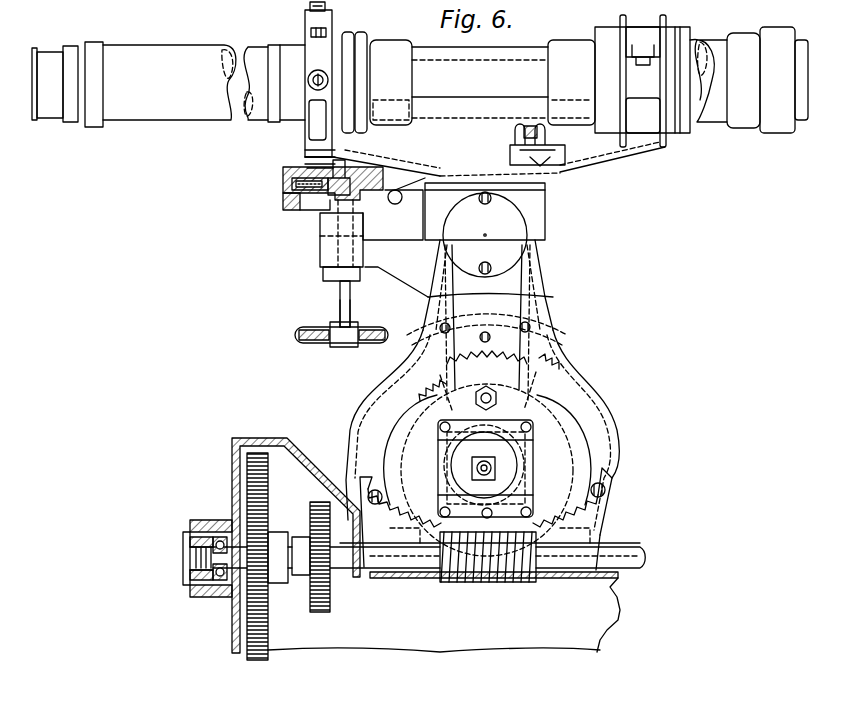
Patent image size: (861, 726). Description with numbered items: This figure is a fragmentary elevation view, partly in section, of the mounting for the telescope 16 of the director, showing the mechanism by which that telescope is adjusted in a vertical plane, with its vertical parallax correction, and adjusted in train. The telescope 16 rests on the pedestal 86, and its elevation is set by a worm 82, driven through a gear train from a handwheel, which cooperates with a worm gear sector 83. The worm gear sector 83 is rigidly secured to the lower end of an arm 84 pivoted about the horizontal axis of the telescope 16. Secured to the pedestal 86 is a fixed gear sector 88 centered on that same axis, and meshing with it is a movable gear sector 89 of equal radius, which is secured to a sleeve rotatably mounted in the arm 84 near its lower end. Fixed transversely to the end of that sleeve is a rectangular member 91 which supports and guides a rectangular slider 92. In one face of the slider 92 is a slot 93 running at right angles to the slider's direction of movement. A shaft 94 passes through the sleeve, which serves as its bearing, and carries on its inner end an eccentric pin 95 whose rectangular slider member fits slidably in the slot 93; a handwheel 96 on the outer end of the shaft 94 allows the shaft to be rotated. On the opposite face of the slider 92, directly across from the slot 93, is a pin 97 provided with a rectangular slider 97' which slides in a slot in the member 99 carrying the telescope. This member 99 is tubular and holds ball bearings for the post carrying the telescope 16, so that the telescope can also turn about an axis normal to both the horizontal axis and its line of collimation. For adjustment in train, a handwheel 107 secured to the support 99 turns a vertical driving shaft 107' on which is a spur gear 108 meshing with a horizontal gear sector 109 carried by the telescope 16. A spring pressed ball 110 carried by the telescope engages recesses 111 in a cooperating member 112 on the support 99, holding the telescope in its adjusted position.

The telescope 16 is at (190, 50).
The worm 82 is at (510, 578).
The worm gear sector 83 is at (605, 503).
The arm 84 is at (462, 374).
The pedestal 86 is at (578, 385).
The fixed gear sector 88 is at (535, 327).
The movable gear sector 89 is at (540, 396).
The rectangular member 91 is at (440, 437).
The rectangular slider 92 is at (533, 447).
The slot 93 is at (455, 477).
The shaft 94 is at (523, 474).
The eccentric pin 95 is at (481, 457).
The handwheel 96 is at (565, 443).
The pin 97 is at (494, 464).
The rectangular slider 97' is at (503, 499).
The member carrying the telescope 99 is at (548, 228).
The handwheel 107 is at (334, 347).
The vertical driving shaft 107' is at (313, 313).
The spur gear 108 is at (335, 205).
The horizontal gear sector 109 is at (383, 200).
The spring pressed ball 110 is at (292, 192).
The recesses 111 is at (295, 185).
The cooperating member 112 is at (290, 208).